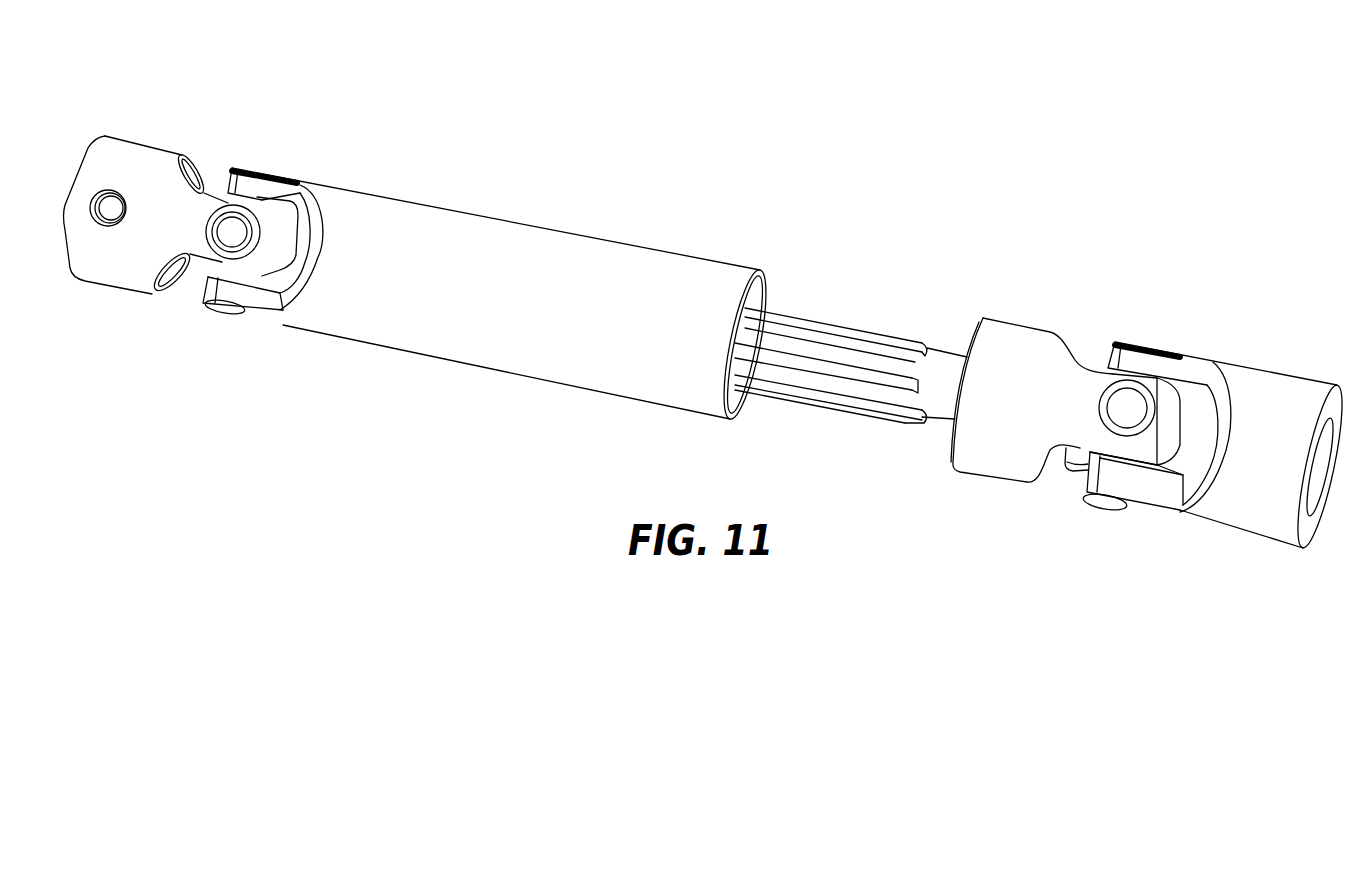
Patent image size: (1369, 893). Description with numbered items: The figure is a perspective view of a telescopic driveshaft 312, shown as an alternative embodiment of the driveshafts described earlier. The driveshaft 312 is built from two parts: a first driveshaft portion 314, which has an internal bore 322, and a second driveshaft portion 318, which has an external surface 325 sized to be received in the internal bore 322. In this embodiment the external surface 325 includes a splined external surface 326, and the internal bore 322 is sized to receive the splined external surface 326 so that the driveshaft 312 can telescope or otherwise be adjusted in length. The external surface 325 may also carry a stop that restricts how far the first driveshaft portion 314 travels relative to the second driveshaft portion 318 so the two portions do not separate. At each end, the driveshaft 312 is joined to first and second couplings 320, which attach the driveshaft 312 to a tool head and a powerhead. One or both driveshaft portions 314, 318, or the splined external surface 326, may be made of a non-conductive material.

The driveshaft 312 is at (1065, 152).
The first driveshaft portion 314 is at (448, 196).
The second driveshaft portion 318 is at (1018, 302).
The coupling 320 is at (153, 163).
The internal bore 322 is at (760, 295).
The external surface 325 is at (938, 362).
The splined external surface 326 is at (812, 357).